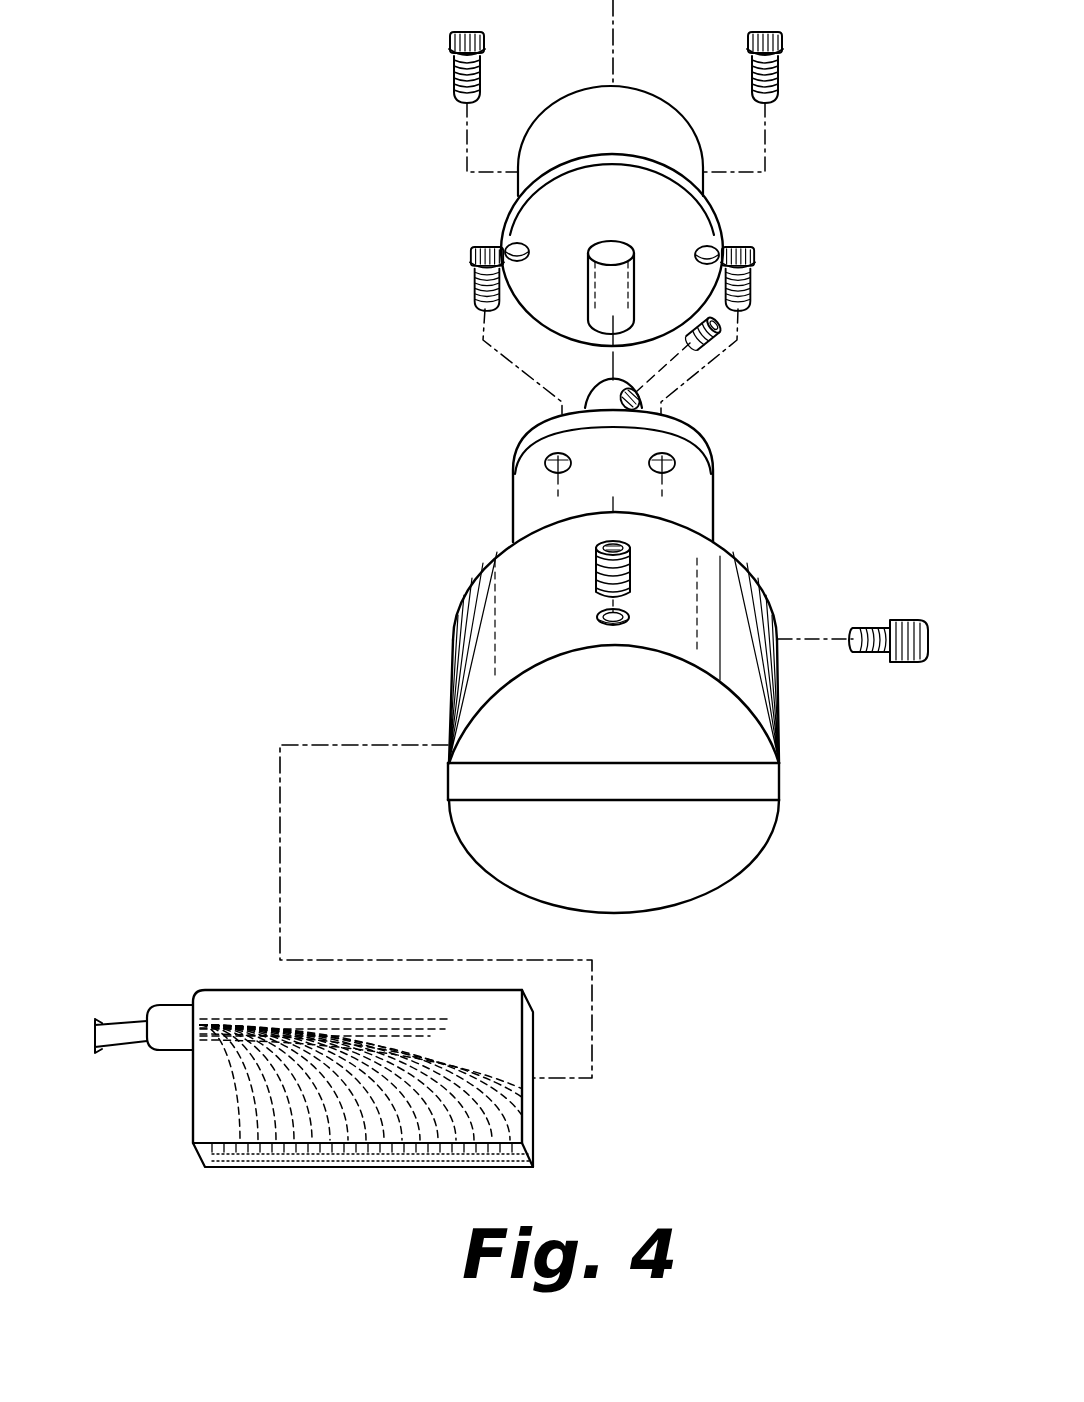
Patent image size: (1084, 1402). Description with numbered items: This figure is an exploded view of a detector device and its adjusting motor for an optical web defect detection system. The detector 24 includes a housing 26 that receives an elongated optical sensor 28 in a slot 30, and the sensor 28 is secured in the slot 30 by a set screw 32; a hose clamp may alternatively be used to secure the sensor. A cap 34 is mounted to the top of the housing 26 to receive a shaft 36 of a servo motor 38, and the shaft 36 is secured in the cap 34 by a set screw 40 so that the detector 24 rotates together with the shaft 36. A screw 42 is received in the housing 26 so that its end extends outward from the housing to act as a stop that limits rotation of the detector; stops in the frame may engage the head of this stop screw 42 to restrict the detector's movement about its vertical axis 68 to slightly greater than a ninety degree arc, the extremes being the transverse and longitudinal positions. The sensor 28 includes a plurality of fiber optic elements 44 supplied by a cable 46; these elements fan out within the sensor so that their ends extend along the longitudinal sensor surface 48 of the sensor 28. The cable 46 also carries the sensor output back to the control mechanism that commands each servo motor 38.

The detector 24 is at (443, 653).
The housing 26 is at (775, 672).
The elongated optical sensor 28 is at (358, 1084).
The slot 30 is at (772, 781).
The set screw 32 is at (631, 582).
The cap 34 is at (523, 467).
The shaft 36 is at (586, 306).
The servo motor 38 is at (677, 136).
The set screw 40 is at (720, 341).
The screw 42 is at (894, 620).
The fiber optic elements 44 is at (193, 1123).
The cable 46 is at (124, 1020).
The longitudinal sensor surface 48 is at (500, 1152).
The vertical axis 68 is at (613, 45).